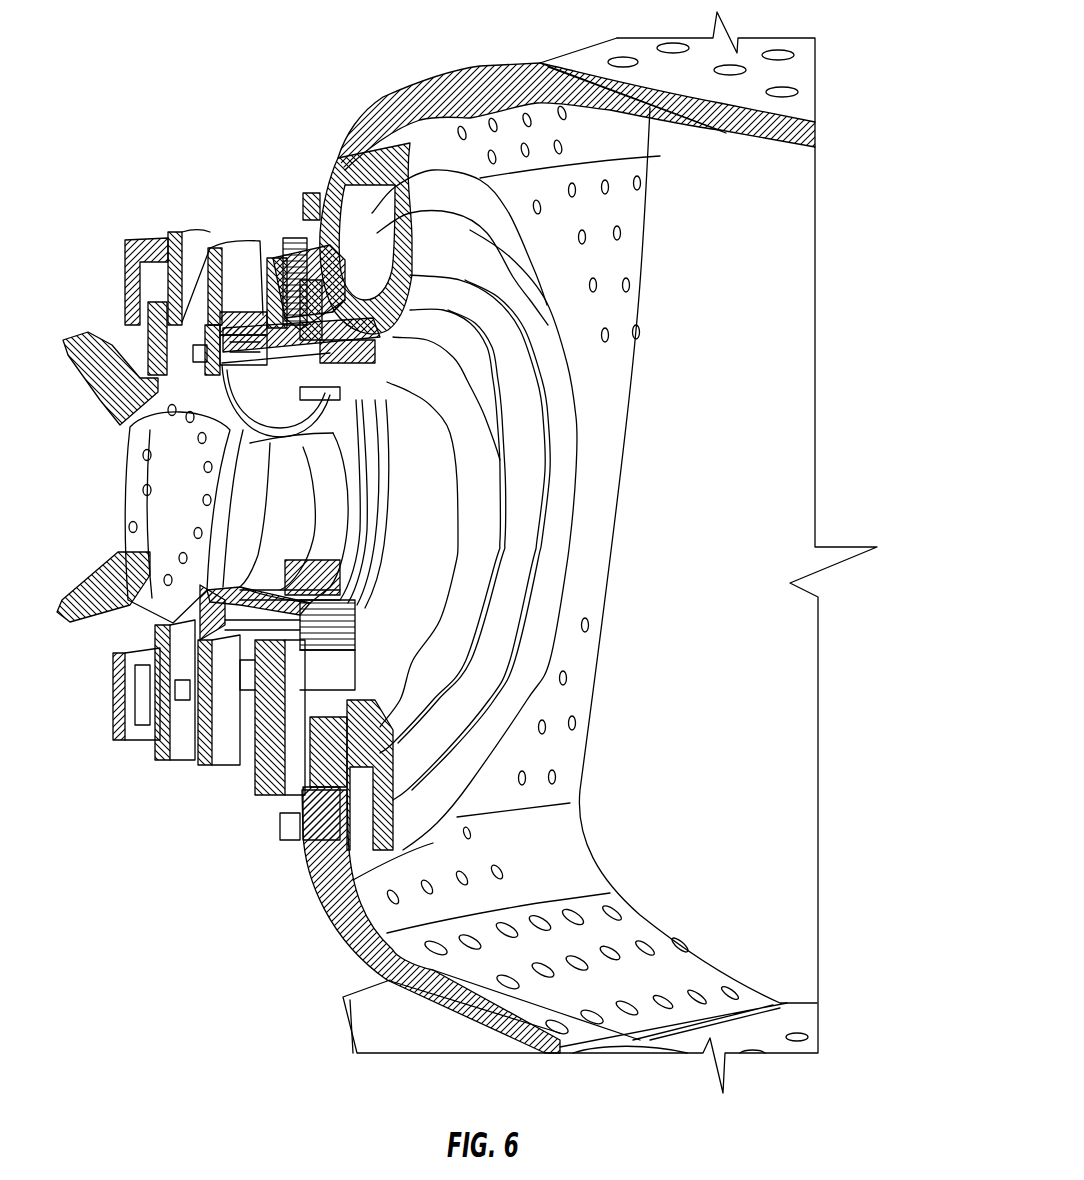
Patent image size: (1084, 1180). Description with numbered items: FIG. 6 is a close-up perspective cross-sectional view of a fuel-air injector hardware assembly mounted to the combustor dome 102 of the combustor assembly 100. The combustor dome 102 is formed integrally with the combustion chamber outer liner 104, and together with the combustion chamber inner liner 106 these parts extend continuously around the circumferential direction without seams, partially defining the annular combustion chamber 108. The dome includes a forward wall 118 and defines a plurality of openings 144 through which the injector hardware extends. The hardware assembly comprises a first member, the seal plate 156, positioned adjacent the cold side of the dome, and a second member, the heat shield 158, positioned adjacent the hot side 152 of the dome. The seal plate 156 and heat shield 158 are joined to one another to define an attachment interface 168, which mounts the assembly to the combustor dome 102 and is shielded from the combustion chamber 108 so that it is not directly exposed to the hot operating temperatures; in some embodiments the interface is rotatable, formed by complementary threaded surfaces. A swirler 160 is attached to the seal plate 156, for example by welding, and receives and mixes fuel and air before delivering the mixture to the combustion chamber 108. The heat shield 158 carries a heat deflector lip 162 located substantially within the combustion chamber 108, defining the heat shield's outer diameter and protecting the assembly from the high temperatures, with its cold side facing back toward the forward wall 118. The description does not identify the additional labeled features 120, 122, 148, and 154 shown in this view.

The combustor assembly 100 is at (870, 160).
The combustor dome 102 is at (636, 554).
The combustion chamber outer liner 104 is at (798, 122).
The combustion chamber inner liner 106 is at (802, 1022).
The combustion chamber 108 is at (722, 573).
The forward wall 118 is at (617, 266).
The cooling holes 120 is at (583, 143).
The aft liner section 122 is at (625, 948).
The openings 144 is at (423, 540).
The fuel nozzle assembly 148 is at (233, 177).
The hot side 152 is at (573, 695).
The inner liner wall 154 is at (310, 902).
The seal plate 156 is at (307, 210).
The heat shield 158 is at (588, 473).
The swirler 160 is at (203, 797).
The heat deflector lip 162 is at (557, 400).
The attachment interface 168 is at (333, 290).